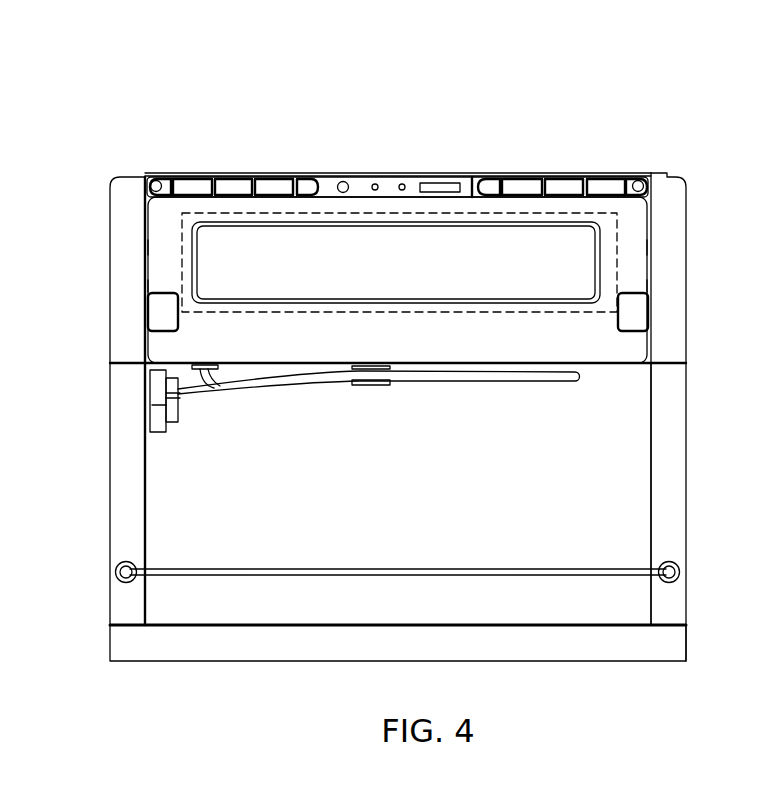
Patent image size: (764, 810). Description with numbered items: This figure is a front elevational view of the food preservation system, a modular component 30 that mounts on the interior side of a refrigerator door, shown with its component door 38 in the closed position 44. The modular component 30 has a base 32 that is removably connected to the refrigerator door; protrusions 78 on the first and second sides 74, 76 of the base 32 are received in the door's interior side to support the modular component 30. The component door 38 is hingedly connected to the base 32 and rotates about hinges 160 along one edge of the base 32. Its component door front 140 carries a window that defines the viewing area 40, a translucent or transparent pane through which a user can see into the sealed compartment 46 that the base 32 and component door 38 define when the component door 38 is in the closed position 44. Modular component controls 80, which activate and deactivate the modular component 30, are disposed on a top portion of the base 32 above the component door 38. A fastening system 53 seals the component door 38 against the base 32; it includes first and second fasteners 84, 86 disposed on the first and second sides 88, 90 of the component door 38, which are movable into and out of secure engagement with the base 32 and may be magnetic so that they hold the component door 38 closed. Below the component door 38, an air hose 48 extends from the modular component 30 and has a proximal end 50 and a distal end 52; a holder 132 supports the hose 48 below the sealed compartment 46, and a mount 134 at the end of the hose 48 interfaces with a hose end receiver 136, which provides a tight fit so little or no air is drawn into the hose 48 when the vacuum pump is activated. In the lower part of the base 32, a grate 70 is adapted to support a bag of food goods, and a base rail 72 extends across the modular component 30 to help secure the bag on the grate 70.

The modular component 30 is at (416, 369).
The base 32 is at (375, 533).
The component door 38 is at (397, 270).
The viewing area 40 is at (375, 273).
The closed position 44 is at (454, 380).
The sealed compartment 46 is at (187, 208).
The air hose 48 is at (298, 376).
The proximal end 50 is at (215, 388).
The distal end 52 is at (180, 395).
The fastening system 53 is at (160, 322).
The grate 70 is at (570, 623).
The base rail 72 is at (248, 565).
The first side 74 is at (112, 460).
The second side 76 is at (688, 458).
The protrusions 78 is at (763, 398).
The modular component controls 80 is at (345, 182).
The first fastener 84 is at (145, 292).
The second fastener 86 is at (650, 297).
The first side 88 is at (145, 247).
The second side 90 is at (650, 250).
The holder 132 is at (368, 390).
The mount 134 is at (176, 417).
The hose end receiver 136 is at (150, 424).
The component door front 140 is at (500, 348).
The hinges 160 is at (157, 183).